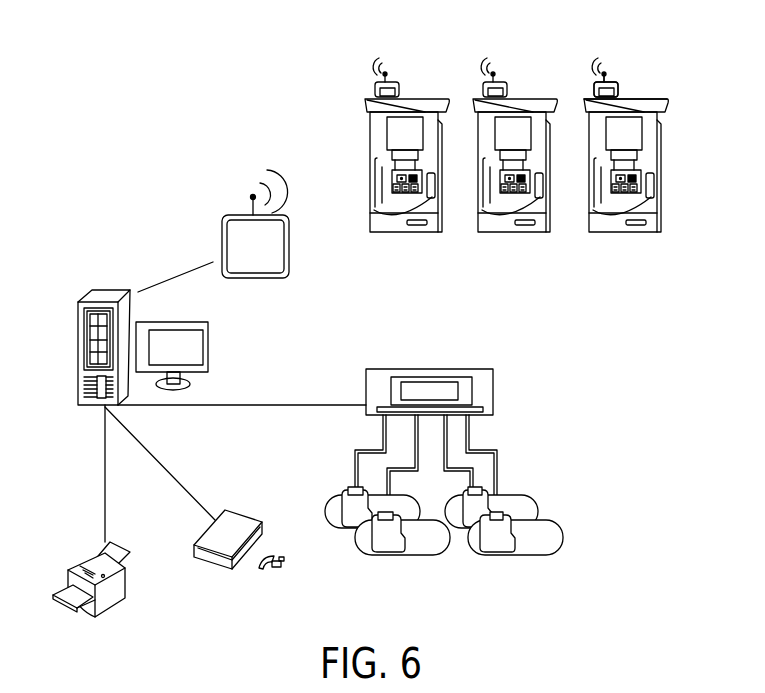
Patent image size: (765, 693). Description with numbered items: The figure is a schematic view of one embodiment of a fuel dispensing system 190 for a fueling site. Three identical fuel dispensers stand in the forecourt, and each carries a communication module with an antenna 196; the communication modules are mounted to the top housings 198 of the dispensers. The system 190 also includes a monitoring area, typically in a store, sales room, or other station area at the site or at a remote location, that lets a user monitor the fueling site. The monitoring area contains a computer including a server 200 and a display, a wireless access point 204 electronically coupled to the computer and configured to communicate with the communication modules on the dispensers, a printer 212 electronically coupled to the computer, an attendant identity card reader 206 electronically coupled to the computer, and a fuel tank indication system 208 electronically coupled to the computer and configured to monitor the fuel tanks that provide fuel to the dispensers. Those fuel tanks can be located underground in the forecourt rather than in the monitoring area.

The fuel dispensing system 190 is at (136, 156).
The antenna 196 is at (606, 68).
The top housing 198 is at (668, 100).
The server 200 is at (78, 380).
The wireless access point 204 is at (289, 252).
The attendant identity card reader 206 is at (240, 512).
The fuel tank indication system 208 is at (546, 438).
The printer 212 is at (125, 588).